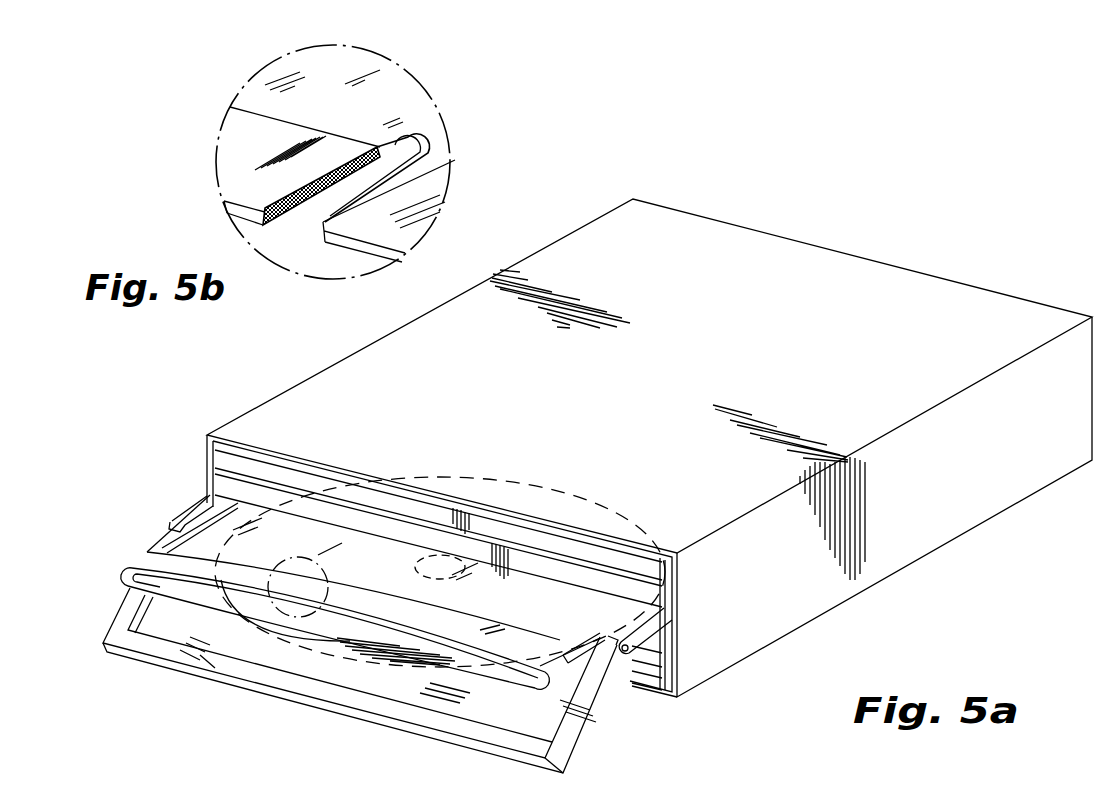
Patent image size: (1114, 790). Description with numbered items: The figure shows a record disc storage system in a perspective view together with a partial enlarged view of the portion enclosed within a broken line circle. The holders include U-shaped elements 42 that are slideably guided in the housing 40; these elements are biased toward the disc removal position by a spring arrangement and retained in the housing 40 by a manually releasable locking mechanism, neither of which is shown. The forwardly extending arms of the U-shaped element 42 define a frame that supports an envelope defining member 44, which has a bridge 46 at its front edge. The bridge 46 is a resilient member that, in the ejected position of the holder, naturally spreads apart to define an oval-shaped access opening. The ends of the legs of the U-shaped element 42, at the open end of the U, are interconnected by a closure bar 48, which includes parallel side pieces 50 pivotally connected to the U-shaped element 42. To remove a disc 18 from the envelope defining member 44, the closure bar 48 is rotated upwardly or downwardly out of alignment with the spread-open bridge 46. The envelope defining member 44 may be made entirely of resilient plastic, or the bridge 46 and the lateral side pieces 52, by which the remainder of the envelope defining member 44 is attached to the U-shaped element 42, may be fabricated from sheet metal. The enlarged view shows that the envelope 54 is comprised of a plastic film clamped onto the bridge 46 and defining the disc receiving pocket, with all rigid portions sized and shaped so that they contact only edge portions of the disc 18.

In FIG. 5A, the disc 18 is at (307, 633).
In FIG. 5A, the housing 40 is at (753, 640).
In FIG. 5A, the U-shaped element 42 is at (193, 515).
In FIG. 5A, the envelope defining member 44 is at (143, 550).
In FIG. 5A, the bridge 46 is at (367, 598).
In FIG. 5B, the bridge 46 is at (238, 175).
In FIG. 5A, the closure bar 48 is at (223, 460).
In FIG. 5A, the side pieces 50 is at (132, 602).
In FIG. 5A, the lateral side pieces 52 is at (580, 657).
In FIG. 5A, the envelope 54 is at (336, 545).
In FIG. 5B, the envelope 54 is at (420, 120).